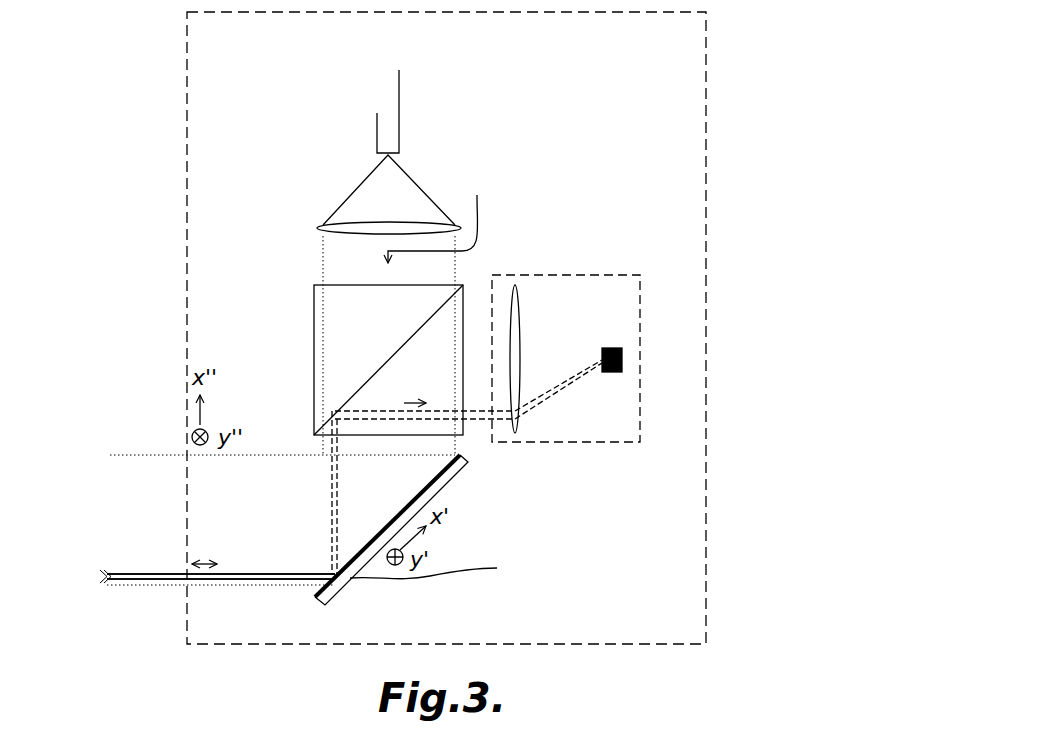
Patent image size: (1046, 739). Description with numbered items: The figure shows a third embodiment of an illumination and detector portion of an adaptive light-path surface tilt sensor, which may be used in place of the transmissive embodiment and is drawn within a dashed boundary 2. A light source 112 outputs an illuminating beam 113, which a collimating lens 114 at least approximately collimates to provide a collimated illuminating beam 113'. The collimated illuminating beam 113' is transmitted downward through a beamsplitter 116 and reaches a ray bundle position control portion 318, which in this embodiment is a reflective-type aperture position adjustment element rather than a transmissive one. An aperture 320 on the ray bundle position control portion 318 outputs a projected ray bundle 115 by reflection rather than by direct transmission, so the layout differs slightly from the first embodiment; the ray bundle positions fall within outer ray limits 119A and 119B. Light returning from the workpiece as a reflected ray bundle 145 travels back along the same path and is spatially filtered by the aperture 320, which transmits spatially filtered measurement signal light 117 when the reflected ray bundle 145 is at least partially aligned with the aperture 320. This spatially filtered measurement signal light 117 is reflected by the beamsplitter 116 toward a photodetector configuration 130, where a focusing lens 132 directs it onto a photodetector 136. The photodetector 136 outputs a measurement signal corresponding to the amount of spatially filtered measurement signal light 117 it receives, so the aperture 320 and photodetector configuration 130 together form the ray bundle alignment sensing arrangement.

The housing / system boundary 2 is at (446, 322).
The light source 112 is at (376, 95).
The illuminating beam 113 is at (374, 190).
The collimated illuminating beam 113' is at (449, 217).
The collimating lens 114 is at (321, 228).
The beamsplitter 116 is at (314, 330).
The spatially filtered measurement signal light 117 is at (330, 492).
The photodetector configuration 130 is at (497, 275).
The focusing lens 132 is at (517, 286).
The photodetector 136 is at (618, 348).
The ray bundle position control portion 318 is at (455, 472).
The aperture 320 is at (447, 566).
The projected ray bundle 115 is at (189, 563).
The reflected ray bundle 145 is at (189, 561).
The outer ray limit 119A is at (168, 583).
The outer ray limit 119B is at (180, 452).